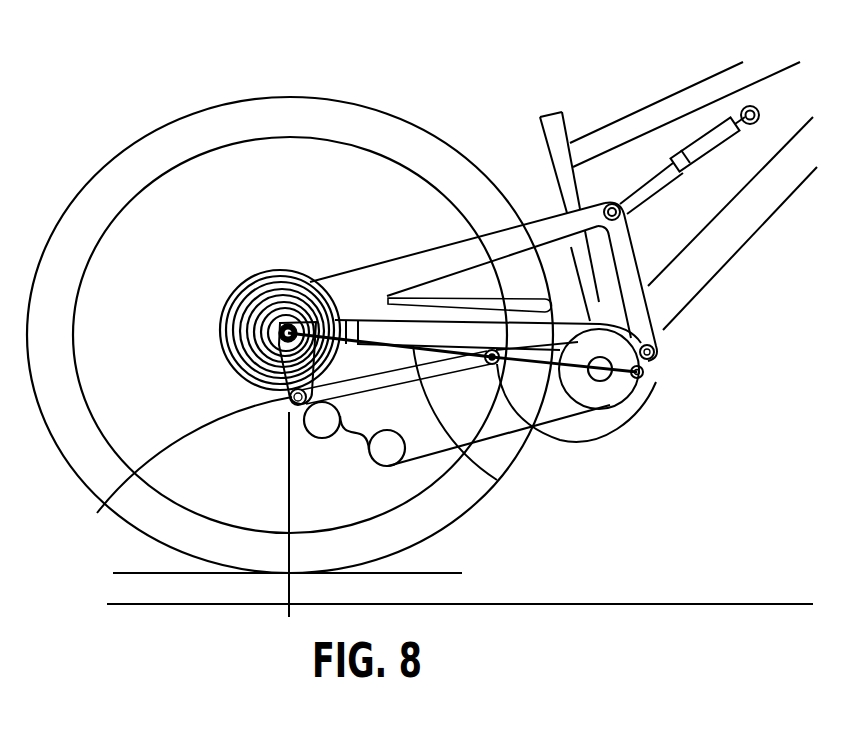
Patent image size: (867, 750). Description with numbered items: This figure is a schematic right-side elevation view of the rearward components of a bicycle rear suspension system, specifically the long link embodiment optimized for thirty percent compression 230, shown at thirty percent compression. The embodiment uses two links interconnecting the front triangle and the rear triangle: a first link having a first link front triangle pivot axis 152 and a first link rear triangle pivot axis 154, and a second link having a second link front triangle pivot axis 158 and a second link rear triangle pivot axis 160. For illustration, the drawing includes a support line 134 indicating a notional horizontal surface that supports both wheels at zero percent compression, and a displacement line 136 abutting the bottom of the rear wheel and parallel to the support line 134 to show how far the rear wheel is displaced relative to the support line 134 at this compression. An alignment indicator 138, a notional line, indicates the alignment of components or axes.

The long link embodiment optimized for 30% compression 230 is at (494, 148).
The second link rear triangle pivot axis 160 is at (177, 476).
The second link front triangle pivot axis 158 is at (625, 437).
The first link rear triangle pivot axis 154 is at (656, 352).
The first link front triangle pivot axis 152 is at (645, 375).
The alignment indicator 138 is at (497, 480).
The displacement line 136 is at (458, 560).
The support line 134 is at (728, 604).